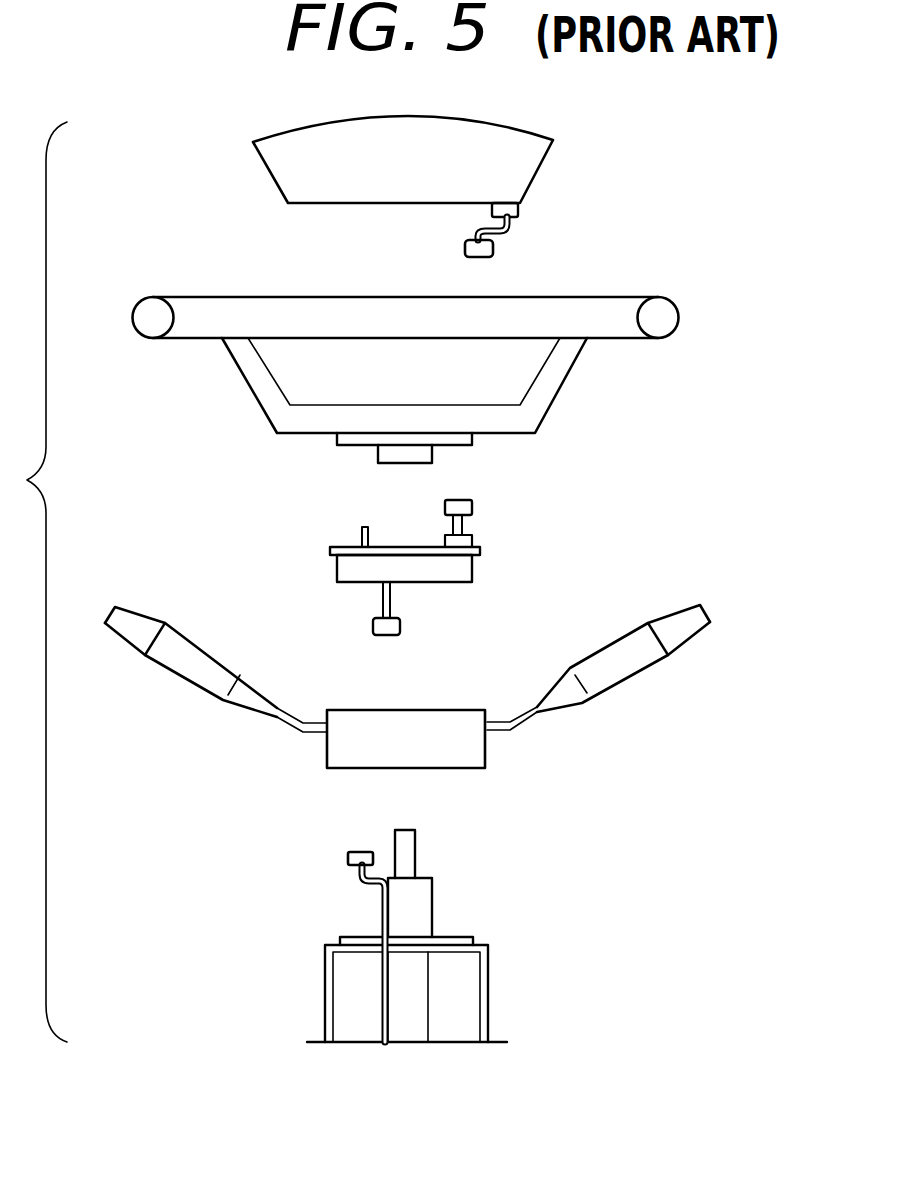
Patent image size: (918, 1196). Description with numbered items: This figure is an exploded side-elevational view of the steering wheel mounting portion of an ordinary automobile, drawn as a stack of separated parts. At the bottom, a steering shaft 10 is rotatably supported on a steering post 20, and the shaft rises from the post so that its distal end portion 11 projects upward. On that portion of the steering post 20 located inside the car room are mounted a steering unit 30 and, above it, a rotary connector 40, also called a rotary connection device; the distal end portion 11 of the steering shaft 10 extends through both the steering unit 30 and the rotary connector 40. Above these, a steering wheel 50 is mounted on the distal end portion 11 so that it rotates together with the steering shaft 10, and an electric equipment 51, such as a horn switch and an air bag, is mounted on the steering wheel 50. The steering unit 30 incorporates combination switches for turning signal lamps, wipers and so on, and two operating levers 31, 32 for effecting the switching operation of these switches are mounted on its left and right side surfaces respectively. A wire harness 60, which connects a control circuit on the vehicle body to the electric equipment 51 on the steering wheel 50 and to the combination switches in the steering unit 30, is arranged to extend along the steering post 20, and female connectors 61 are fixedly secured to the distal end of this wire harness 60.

The steering shaft 10 is at (440, 901).
The distal end portion 11 is at (407, 852).
The steering post 20 is at (489, 952).
The steering unit 30 is at (407, 720).
The operating lever 31 is at (178, 662).
The operating lever 32 is at (625, 667).
The rotary connector 40 is at (480, 563).
The steering wheel 50 is at (660, 319).
The electric equipment 51 is at (545, 167).
The wire harness 60 is at (382, 910).
The female connector 61 is at (347, 858).